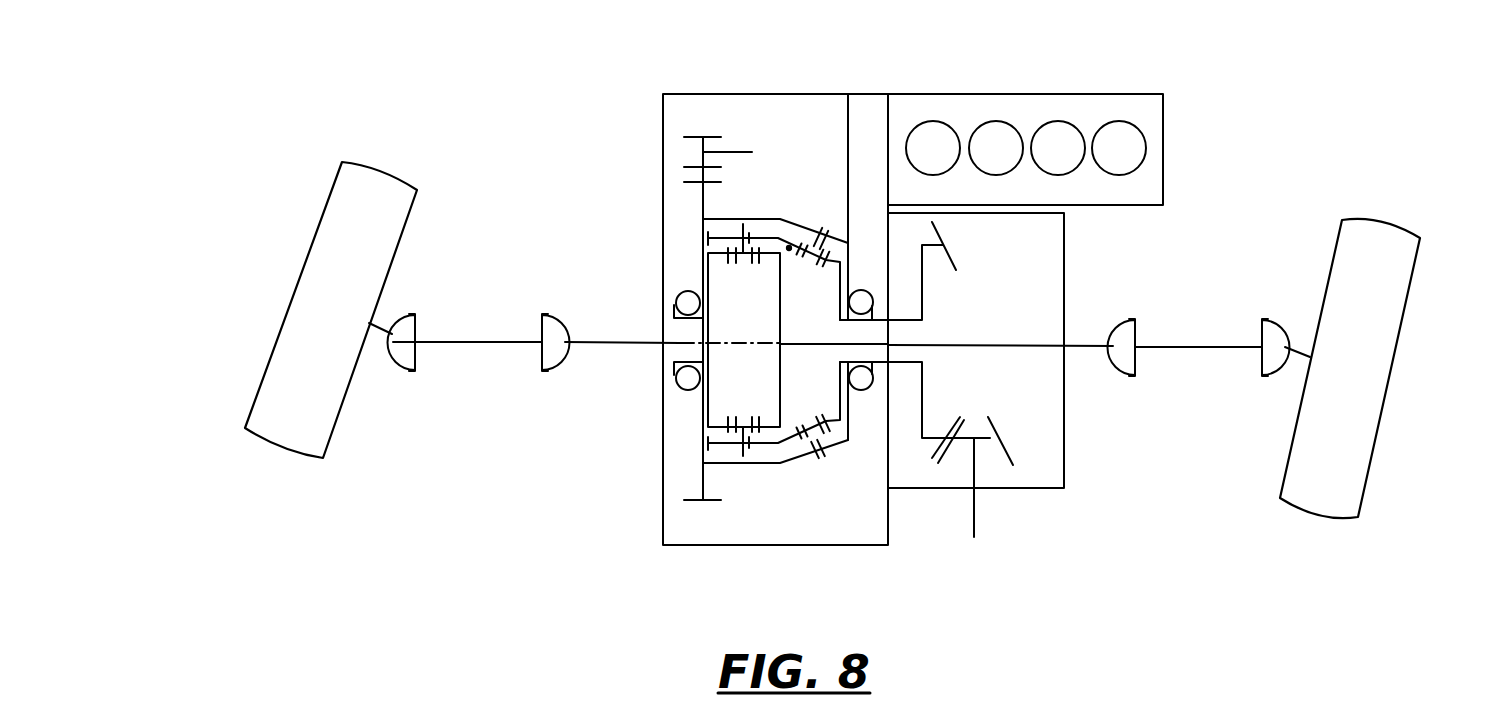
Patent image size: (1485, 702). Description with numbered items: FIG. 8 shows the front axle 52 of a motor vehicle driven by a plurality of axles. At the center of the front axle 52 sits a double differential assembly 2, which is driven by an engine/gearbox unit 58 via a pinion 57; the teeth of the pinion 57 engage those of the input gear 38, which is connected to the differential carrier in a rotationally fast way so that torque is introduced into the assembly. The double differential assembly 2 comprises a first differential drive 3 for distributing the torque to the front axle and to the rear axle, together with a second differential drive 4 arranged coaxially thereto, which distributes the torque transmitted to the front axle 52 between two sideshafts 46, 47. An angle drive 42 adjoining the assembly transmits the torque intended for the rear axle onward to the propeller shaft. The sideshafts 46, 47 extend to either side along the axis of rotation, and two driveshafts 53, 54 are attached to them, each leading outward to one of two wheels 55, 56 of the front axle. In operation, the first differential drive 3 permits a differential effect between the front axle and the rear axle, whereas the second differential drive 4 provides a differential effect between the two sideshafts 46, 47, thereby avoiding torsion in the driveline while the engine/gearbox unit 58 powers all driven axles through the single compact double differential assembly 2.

The double differential assembly 2 is at (784, 198).
The first differential drive 3 is at (825, 482).
The second differential drive 4 is at (738, 479).
The input gear 38 is at (690, 181).
The angle drive 42 is at (1065, 268).
The sideshaft 46 is at (947, 345).
The sideshaft 47 is at (627, 343).
The front axle 52 is at (306, 305).
The driveshaft 53 is at (1183, 347).
The driveshaft 54 is at (457, 342).
The wheel 55 is at (1336, 239).
The wheel 56 is at (322, 433).
The pinion 57 is at (690, 137).
The engine/gearbox unit 58 is at (1037, 98).